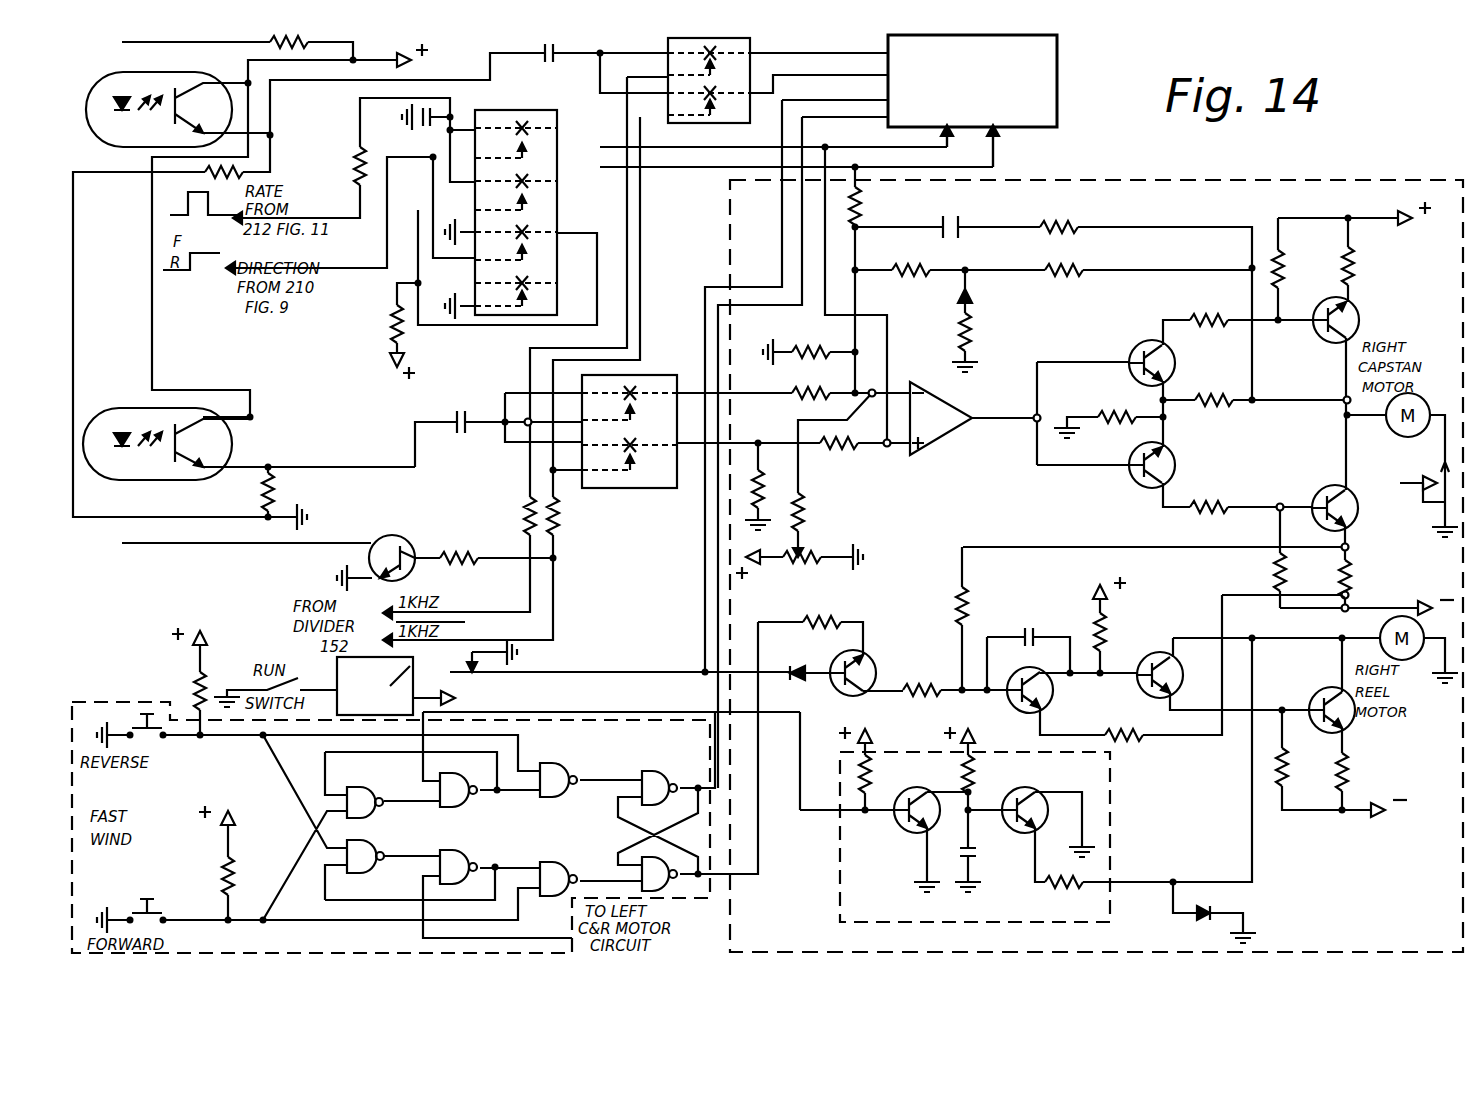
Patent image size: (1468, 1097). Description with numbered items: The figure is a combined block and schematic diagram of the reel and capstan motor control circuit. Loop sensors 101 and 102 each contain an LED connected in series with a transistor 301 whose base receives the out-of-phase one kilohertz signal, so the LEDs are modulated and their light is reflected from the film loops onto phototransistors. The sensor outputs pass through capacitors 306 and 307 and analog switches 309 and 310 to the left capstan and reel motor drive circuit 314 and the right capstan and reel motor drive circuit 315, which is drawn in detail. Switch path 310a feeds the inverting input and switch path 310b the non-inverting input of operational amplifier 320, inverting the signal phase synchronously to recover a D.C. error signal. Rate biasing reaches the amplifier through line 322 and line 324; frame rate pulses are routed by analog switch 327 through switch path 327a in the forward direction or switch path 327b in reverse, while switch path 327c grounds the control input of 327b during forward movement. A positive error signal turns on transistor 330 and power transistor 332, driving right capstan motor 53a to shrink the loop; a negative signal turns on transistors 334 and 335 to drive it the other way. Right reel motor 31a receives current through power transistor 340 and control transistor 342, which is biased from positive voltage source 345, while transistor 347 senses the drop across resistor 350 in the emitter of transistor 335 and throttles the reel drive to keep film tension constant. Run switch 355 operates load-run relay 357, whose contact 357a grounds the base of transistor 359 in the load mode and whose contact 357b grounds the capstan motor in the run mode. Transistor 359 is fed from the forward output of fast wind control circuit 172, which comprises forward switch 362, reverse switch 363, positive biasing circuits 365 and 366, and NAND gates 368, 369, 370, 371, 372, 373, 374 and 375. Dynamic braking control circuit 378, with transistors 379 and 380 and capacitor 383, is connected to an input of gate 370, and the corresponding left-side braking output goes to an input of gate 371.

The loop sensor 101 is at (148, 71).
The loop sensor 102 is at (143, 479).
The transistor 301 is at (392, 535).
The capacitor 306 is at (540, 50).
The capacitor 307 is at (460, 435).
The analog switch 309 is at (752, 44).
The analog switch 310 is at (639, 454).
The switch path 310a is at (636, 388).
The switch path 310b is at (638, 452).
The left capstan and reel motor drive circuit 314 is at (1058, 58).
The right capstan and reel motor drive circuit 315 is at (1189, 177).
The operational amplifier 320 is at (948, 437).
The line 322 is at (688, 147).
The line 324 is at (680, 168).
The analog switch 327 is at (539, 193).
The switch path 327a is at (528, 122).
The switch path 327b is at (529, 184).
The switch path 327c is at (529, 233).
The transistor 330 is at (1140, 342).
The power transistor 332 is at (1353, 312).
The transistor 334 is at (1173, 450).
The power transistor 335 is at (1318, 488).
The power transistor 340 is at (1345, 727).
The control transistor 342 is at (1148, 653).
The positive voltage source 345 is at (1095, 590).
The transistor 347 is at (1053, 696).
The resistor 350 is at (1352, 573).
The run switch 355 is at (250, 683).
The load-run relay 357 is at (470, 660).
The relay contact 357a is at (473, 675).
The relay contact 357b is at (1420, 483).
The transistor 359 is at (868, 660).
The forward switch 362 is at (142, 908).
The reverse switch 363 is at (142, 712).
The positive biasing circuit 365 is at (229, 840).
The positive biasing circuit 366 is at (193, 643).
The NAND gate 368 is at (372, 779).
The NAND gate 369 is at (376, 848).
The NAND gate 370 is at (466, 805).
The NAND gate 371 is at (470, 840).
The NAND gate 372 is at (560, 755).
The NAND gate 373 is at (556, 862).
The NAND gate 374 is at (652, 770).
The NAND gate 375 is at (705, 880).
The dynamic braking control circuit 378 is at (1110, 793).
The transistor 379 is at (925, 782).
The transistor 380 is at (1060, 782).
The capacitor 383 is at (960, 851).
The right capstan motor 53a is at (1390, 432).
The right reel motor 31a is at (1382, 632).
The fast wind control circuit 172 is at (610, 723).